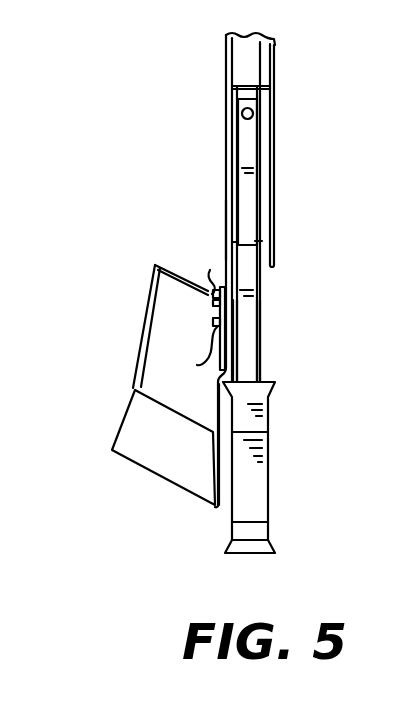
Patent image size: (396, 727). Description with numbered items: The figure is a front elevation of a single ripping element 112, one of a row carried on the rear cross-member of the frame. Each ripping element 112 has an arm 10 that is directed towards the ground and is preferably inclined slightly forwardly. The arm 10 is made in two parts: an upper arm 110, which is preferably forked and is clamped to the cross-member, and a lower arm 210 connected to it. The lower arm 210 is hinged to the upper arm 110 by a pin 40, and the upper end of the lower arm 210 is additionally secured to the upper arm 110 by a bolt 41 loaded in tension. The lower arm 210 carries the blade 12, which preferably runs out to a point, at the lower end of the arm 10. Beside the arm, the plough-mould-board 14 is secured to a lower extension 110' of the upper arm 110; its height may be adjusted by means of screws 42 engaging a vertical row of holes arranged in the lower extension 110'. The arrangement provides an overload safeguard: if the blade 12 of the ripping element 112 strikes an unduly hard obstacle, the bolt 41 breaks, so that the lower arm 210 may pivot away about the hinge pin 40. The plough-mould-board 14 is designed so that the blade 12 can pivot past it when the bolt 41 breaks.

The arm 10 is at (280, 222).
The upper arm 110 is at (208, 211).
The lower extension 110' is at (186, 225).
The pin 40 is at (272, 247).
The bolt 41 is at (253, 112).
The screws 42 is at (216, 288).
The plough-mould-board 14 is at (160, 320).
The lower arm 210 is at (256, 348).
The blade 12 is at (253, 462).
The ripping element 112 is at (308, 424).